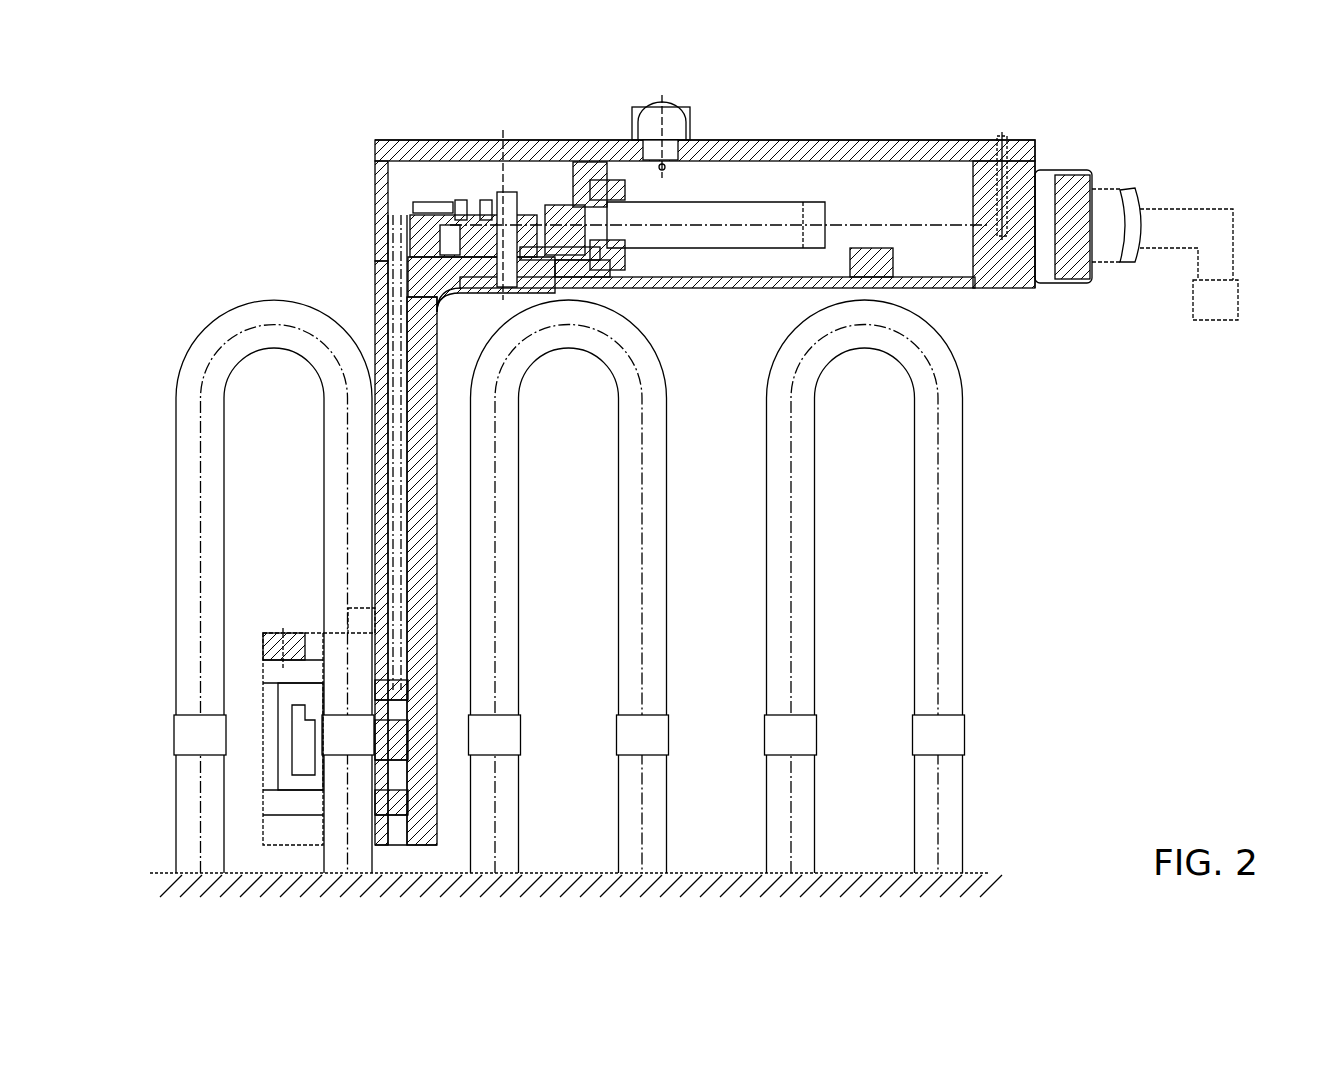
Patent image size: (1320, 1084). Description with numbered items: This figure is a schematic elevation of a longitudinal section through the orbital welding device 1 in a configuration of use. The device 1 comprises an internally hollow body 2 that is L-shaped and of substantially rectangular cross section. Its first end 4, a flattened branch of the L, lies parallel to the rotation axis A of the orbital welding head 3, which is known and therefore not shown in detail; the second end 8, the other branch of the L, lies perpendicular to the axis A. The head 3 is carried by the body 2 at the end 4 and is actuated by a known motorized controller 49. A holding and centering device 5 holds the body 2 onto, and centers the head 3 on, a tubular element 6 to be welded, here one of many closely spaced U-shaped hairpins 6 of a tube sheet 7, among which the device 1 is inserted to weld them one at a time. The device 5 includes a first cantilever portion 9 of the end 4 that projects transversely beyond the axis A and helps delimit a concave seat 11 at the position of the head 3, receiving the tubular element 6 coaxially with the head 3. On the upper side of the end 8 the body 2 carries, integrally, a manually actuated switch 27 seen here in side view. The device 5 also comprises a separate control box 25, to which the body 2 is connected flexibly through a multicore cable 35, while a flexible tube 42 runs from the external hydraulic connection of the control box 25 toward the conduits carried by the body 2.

The orbital welding device 1 is at (1030, 308).
The hollow body 2 is at (795, 141).
The orbital welding head 3 is at (300, 748).
The first end 4 is at (437, 519).
The holding and centering device 5 is at (294, 630).
The tubular element 6 is at (950, 470).
The tube sheet 7 is at (175, 880).
The second end 8 is at (933, 160).
The first cantilever portion 9 is at (318, 640).
The concave seat 11 is at (365, 700).
The control box 25 is at (1230, 300).
The manually actuated switch 27 is at (672, 116).
The multicore cable 35 is at (1150, 252).
The flexible tube 42 is at (1198, 209).
The motorized controller 49 is at (531, 190).
The rotation axis A is at (340, 858).